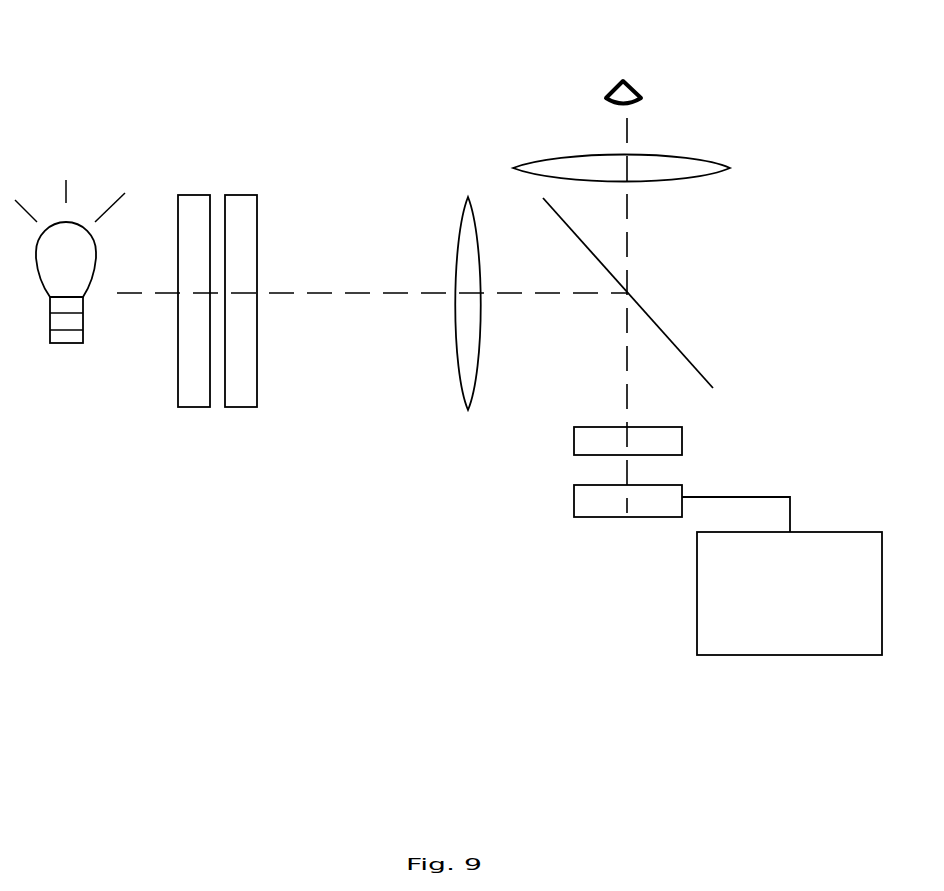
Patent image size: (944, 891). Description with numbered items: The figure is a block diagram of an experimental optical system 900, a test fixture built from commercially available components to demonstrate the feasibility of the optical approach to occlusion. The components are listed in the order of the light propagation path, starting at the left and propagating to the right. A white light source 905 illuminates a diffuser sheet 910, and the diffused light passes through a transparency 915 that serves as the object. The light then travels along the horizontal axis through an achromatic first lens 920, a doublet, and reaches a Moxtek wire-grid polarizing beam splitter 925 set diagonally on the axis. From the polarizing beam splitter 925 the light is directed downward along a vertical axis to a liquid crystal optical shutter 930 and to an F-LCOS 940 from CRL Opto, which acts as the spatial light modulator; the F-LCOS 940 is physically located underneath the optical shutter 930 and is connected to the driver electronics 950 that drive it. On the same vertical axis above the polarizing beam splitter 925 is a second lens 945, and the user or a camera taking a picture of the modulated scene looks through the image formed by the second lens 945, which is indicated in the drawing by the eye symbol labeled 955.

The test fixture 900 is at (777, 102).
The light source 905 is at (70, 272).
The diffuser sheet 910 is at (178, 195).
The transparency 915 is at (242, 195).
The first lens 920 is at (469, 197).
The polarizing beam splitter 925 is at (693, 362).
The liquid crystal optical shutter 930 is at (682, 427).
The F-LCOS/LCD 940 is at (574, 485).
The second lens 945 is at (730, 167).
The driver 950 is at (782, 576).
The eye 955 is at (623, 80).